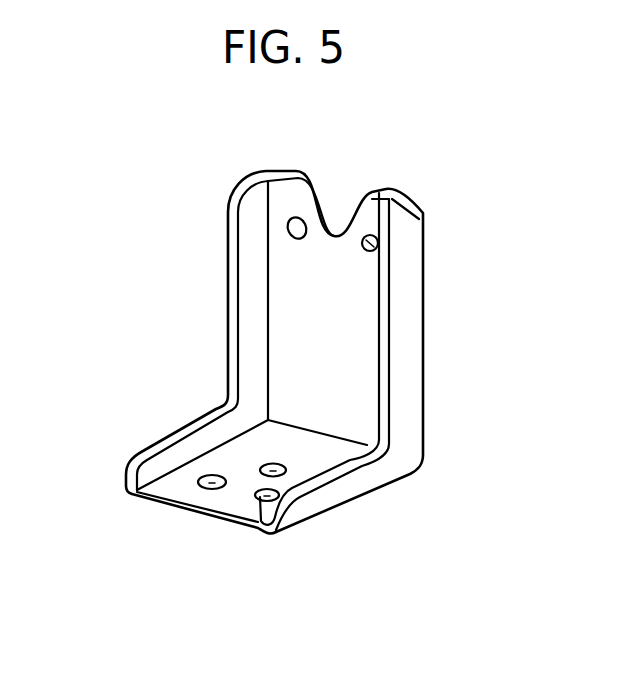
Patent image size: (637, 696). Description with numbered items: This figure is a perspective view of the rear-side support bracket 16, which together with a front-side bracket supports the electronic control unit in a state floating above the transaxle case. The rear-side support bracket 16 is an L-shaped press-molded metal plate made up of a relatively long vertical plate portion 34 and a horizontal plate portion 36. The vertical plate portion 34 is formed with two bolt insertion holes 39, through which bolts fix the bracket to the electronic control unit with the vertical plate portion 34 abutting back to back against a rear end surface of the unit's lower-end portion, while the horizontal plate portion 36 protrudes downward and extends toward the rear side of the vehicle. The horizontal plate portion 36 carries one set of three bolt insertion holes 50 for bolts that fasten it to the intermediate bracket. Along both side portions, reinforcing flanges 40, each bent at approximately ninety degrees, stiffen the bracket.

The rear-side support bracket 16 is at (130, 214).
The vertical plate portion 34 is at (332, 254).
The horizontal plate portion 36 is at (228, 500).
The bolt insertion holes 39 is at (302, 236).
The reinforcing flanges 40 is at (250, 311).
The bolt insertion holes 50 is at (215, 476).